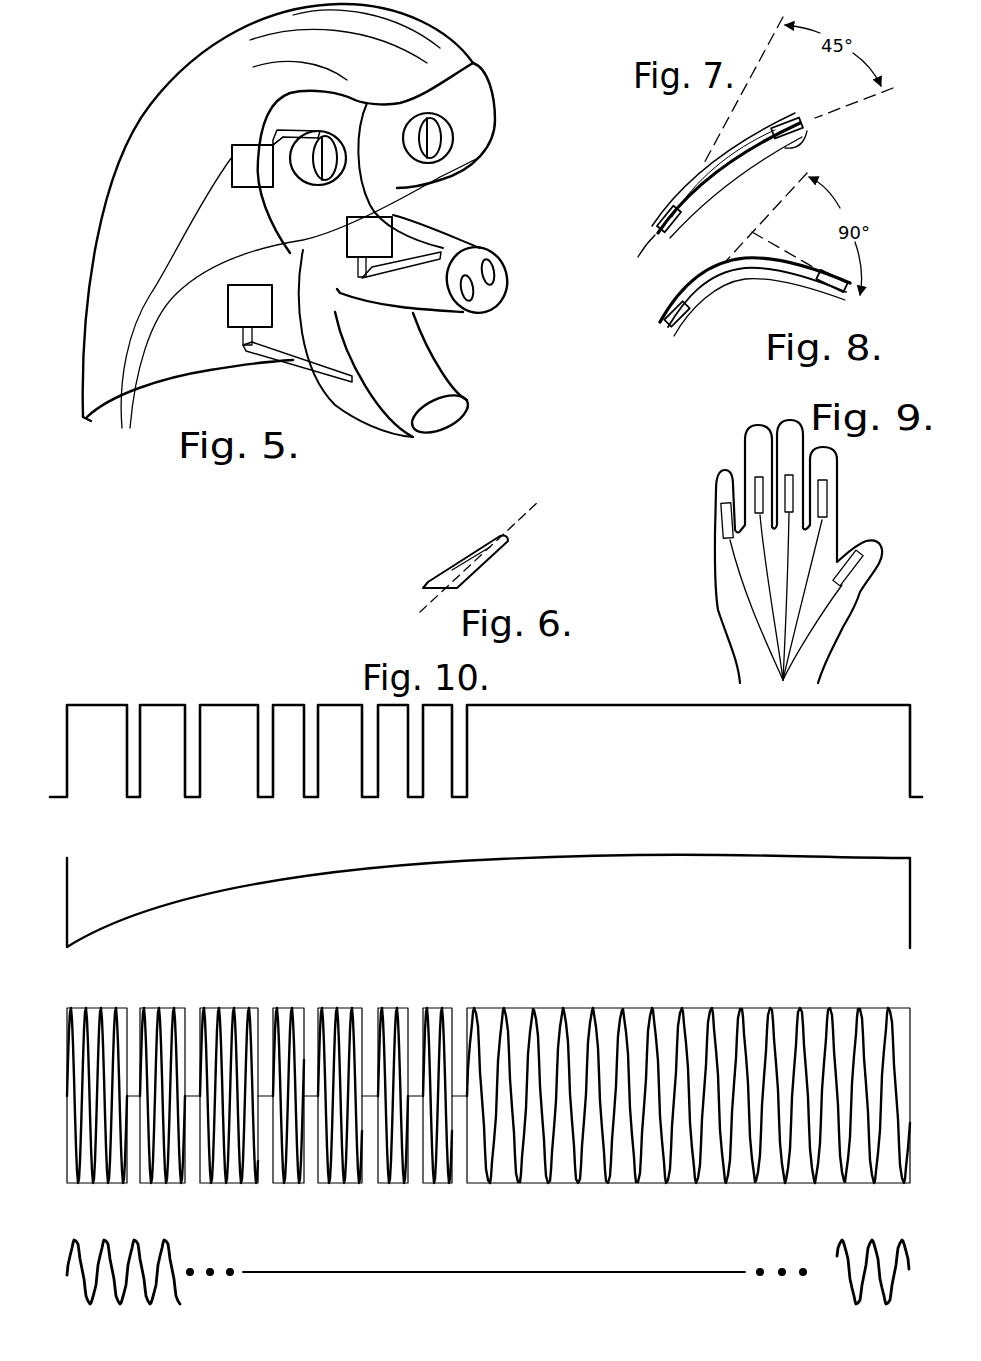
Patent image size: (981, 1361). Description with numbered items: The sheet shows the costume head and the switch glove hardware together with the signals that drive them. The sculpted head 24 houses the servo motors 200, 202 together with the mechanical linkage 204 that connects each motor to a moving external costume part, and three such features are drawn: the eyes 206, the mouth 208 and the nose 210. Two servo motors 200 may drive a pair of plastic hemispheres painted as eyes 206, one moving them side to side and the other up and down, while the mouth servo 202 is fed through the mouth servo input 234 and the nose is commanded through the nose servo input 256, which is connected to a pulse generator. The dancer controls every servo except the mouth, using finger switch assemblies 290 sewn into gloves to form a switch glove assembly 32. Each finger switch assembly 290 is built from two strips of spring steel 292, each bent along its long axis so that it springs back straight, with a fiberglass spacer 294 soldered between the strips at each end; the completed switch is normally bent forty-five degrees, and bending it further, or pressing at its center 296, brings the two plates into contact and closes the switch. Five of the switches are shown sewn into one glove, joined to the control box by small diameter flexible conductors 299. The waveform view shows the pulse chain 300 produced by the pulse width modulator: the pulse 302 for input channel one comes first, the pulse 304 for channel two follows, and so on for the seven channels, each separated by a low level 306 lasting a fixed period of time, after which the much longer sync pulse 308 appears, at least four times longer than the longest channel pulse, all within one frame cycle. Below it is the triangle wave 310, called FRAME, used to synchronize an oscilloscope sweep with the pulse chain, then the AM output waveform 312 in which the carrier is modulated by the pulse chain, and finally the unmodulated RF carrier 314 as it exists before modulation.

In FIG. 5, the sculpted head 24 is at (213, 53).
In FIG. 5, the servo motor 200 is at (233, 145).
In FIG. 5, the mouth servo motor 202 is at (272, 285).
In FIG. 5, the mechanical linkage 204 is at (301, 130).
In FIG. 5, the eyes 206 is at (332, 171).
In FIG. 5, the mouth 208 is at (442, 342).
In FIG. 5, the nose 210 is at (495, 271).
In FIG. 5, the mouth servo input 234 is at (226, 300).
In FIG. 5, the nose servo input 256 is at (395, 216).
In FIG. 7, the finger switch assembly 290 is at (742, 182).
In FIG. 9, the finger switch assembly 290 is at (868, 562).
In FIG. 6, the spring steel strip 292 is at (452, 568).
In FIG. 7, the spring steel strip 292 is at (758, 120).
In FIG. 8, the spring steel strip 292 is at (818, 263).
In FIG. 7, the fiberglass spacer 294 is at (795, 118).
In FIG. 8, the fiberglass spacer 294 is at (838, 290).
In FIG. 8, the center of switch 296 is at (742, 300).
In FIG. 9, the flexible conductors 299 is at (797, 672).
In FIG. 9, the switch glove assembly 32 is at (864, 538).
In FIG. 10, the pulse chain 300 is at (275, 697).
In FIG. 10, the channel one pulse 302 is at (86, 702).
In FIG. 10, the channel two pulse 304 is at (148, 702).
In FIG. 10, the pulse gap 306 is at (124, 797).
In FIG. 10, the sync pulse 308 is at (622, 705).
In FIG. 10, the triangle wave 310 is at (552, 856).
In FIG. 10, the AM output waveform 312 is at (865, 1008).
In FIG. 10, the unmodulated RF carrier 314 is at (877, 1250).